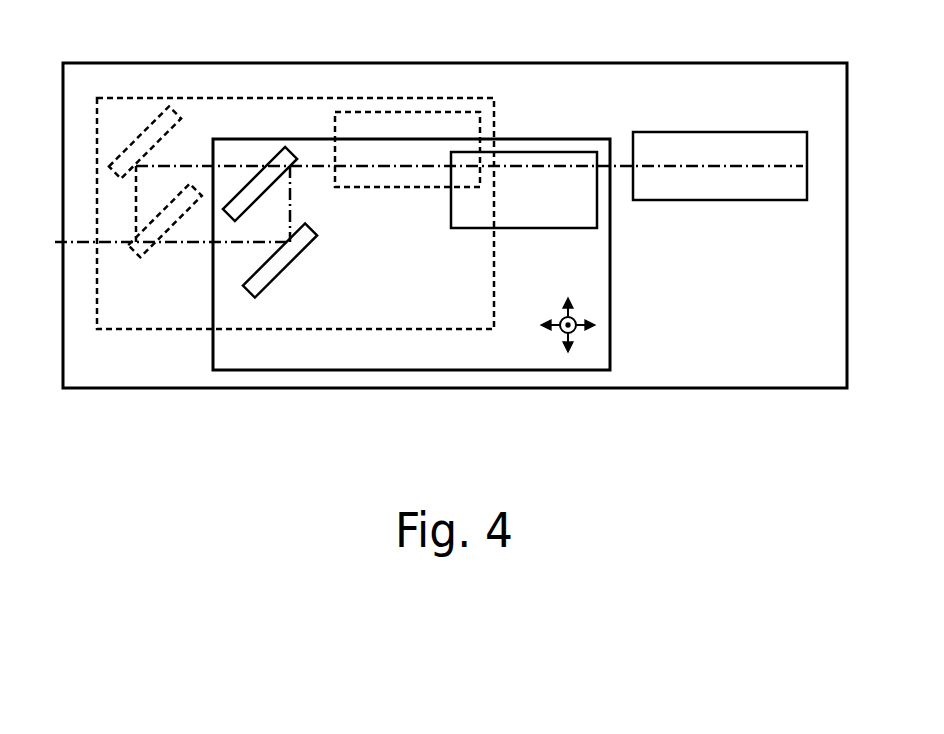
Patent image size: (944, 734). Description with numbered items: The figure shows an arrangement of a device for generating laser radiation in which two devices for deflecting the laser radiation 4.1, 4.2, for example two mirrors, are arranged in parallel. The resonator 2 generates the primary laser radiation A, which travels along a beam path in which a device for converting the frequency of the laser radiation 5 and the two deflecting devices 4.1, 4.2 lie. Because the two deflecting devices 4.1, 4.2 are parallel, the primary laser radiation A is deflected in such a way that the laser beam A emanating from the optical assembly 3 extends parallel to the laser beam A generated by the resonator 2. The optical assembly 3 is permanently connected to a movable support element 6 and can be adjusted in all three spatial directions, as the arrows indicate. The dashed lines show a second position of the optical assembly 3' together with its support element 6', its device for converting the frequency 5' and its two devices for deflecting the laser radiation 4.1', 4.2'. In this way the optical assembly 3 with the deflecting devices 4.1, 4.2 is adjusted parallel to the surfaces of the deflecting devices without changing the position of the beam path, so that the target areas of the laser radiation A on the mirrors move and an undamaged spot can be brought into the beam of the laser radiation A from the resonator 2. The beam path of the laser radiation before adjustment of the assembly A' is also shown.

The resonator 2 is at (698, 200).
The optical assembly 3 is at (438, 254).
The optical assembly in second position 3' is at (295, 236).
The device for deflecting the laser radiation 4.1 is at (303, 191).
The device for deflecting the laser radiation 4.2 is at (308, 264).
The device for deflecting the laser radiation in second position 4.1' is at (179, 142).
The device for deflecting the laser radiation in second position 4.2' is at (170, 242).
The device for converting the frequency of the laser radiation 5 is at (524, 213).
The device for converting the frequency of the laser radiation in second position 5' is at (407, 177).
The support element 6 is at (556, 325).
The support element in second position 6' is at (416, 277).
The primary laser radiation A is at (469, 205).
The beam path of the laser radiation before adjustment of the assembly A' is at (219, 135).